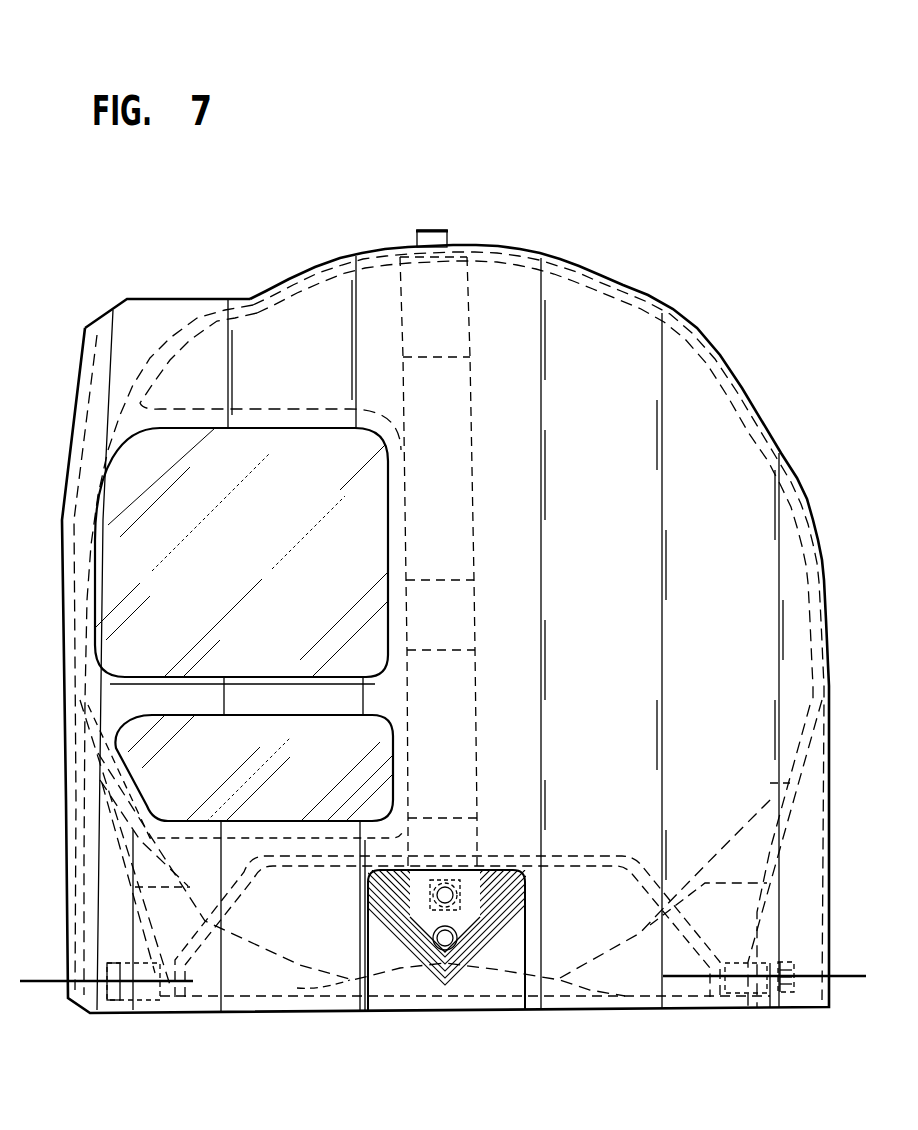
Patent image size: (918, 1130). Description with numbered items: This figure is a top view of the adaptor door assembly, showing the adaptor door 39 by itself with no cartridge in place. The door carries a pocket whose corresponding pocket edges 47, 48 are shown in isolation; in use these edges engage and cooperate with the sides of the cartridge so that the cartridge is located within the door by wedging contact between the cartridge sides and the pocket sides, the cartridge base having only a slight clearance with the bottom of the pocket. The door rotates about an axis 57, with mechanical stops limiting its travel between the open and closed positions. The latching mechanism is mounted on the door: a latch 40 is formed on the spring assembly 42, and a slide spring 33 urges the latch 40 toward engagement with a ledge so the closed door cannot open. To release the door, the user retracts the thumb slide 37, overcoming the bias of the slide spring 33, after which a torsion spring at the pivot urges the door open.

The slide spring 33 is at (355, 980).
The thumb slide 37 is at (425, 1010).
The adaptor door 39 is at (702, 320).
The latch 40 is at (442, 230).
The spring assembly 42 is at (490, 522).
The pocket edge 47 is at (108, 843).
The pocket edge 48 is at (772, 816).
The axis 57 is at (810, 977).